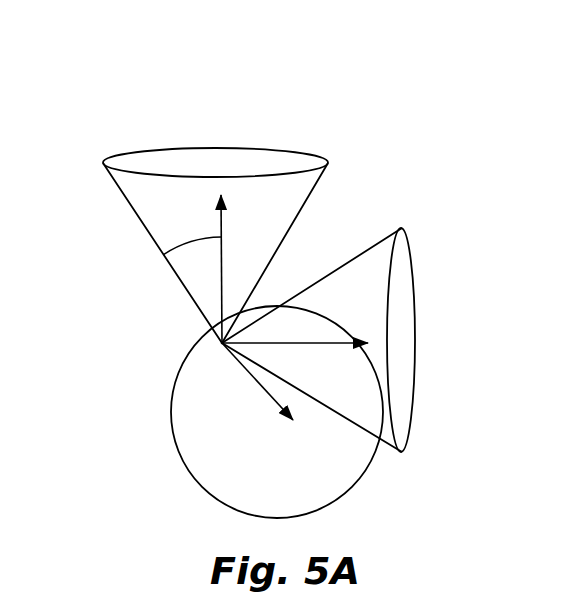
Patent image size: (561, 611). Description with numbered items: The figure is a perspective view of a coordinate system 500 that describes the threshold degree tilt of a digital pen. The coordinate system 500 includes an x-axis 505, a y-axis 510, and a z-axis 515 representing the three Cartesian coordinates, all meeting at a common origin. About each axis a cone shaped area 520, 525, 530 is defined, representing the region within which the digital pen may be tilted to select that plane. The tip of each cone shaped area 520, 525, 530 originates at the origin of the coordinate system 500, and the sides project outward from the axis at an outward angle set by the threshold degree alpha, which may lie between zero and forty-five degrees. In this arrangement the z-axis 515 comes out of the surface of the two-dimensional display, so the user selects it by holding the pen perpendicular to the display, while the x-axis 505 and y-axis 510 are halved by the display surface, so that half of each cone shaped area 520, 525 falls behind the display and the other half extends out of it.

The coordinate system 500 is at (147, 108).
The x-axis 505 is at (295, 343).
The y-axis 510 is at (221, 269).
The z-axis 515 is at (257, 390).
The cone shaped area 520 is at (404, 222).
The cone shaped area 525 is at (308, 151).
The cone shaped area 530 is at (176, 386).